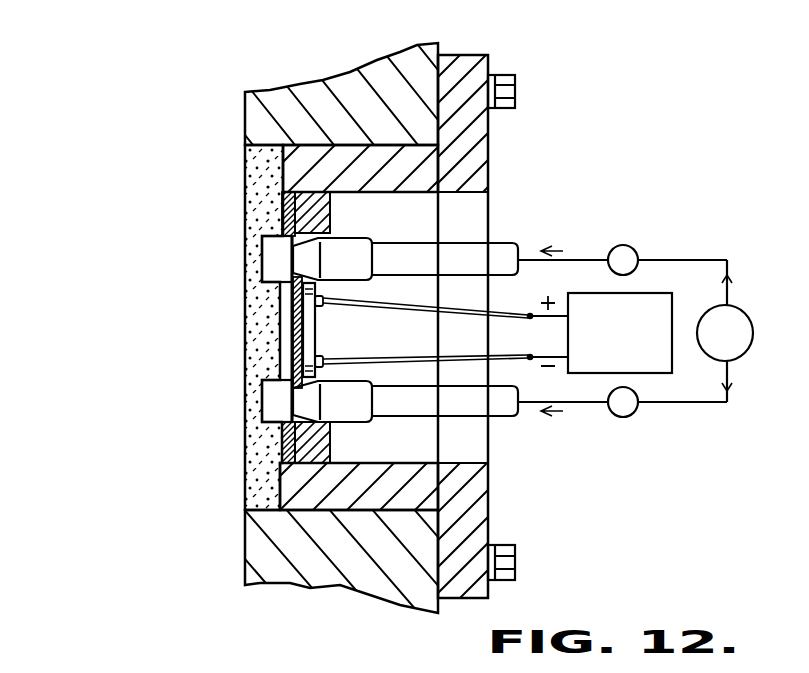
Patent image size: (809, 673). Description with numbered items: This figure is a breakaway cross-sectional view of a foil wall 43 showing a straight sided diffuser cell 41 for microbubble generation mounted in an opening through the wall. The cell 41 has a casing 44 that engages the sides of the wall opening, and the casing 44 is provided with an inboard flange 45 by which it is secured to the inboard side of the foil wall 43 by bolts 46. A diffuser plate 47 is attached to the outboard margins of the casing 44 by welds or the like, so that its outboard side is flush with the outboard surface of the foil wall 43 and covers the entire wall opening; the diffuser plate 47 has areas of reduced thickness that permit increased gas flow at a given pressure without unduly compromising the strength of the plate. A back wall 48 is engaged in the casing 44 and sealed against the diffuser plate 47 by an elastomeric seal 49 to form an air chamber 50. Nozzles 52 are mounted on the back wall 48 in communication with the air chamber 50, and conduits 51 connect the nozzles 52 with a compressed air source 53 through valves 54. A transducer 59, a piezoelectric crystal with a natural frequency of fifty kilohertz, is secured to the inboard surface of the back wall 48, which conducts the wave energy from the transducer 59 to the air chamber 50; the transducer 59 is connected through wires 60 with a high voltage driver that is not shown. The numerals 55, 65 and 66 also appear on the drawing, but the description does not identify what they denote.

The straight sided diffuser cell 41 is at (222, 340).
The foil wall 43 is at (245, 122).
The casing 44 is at (386, 196).
The inboard flange 45 is at (490, 153).
The bolts 46 is at (515, 91).
The diffuser plate 47 is at (245, 218).
The back wall 48 is at (331, 213).
The elastomeric seal 49 is at (282, 196).
The air chamber 50 is at (286, 276).
The conduits 51 is at (350, 387).
The nozzles 52 is at (403, 388).
The compressed air source 53 is at (752, 313).
The valves 54 is at (620, 246).
The electrode housing 55 is at (252, 262).
The transducer 59 is at (318, 330).
The wires 60 is at (474, 320).
The element 65 is at (352, 661).
The element 66 is at (306, 661).